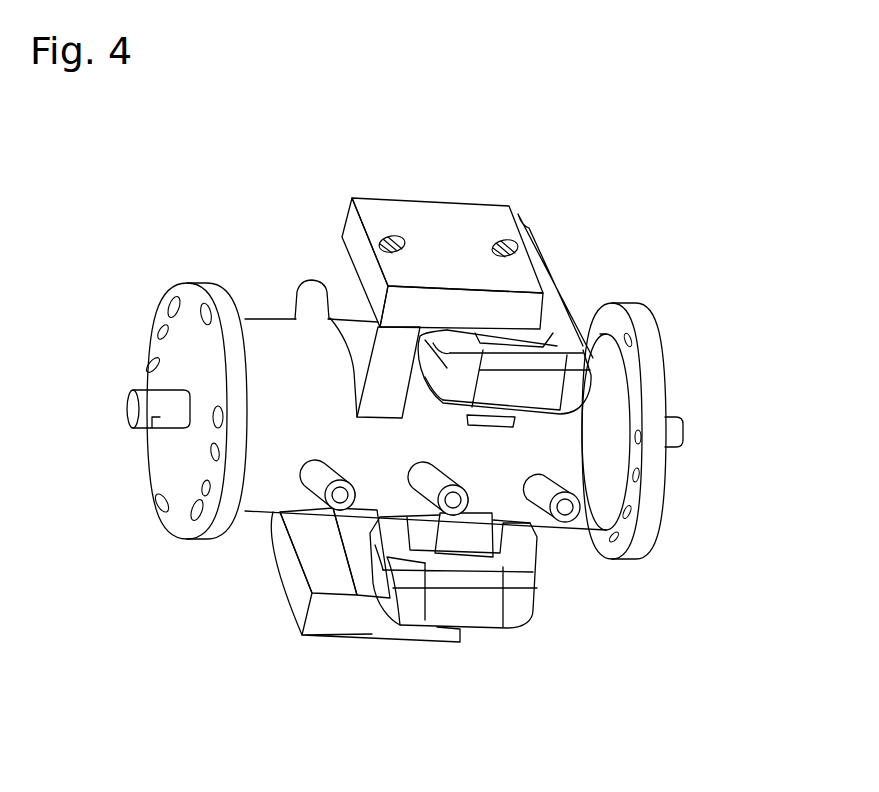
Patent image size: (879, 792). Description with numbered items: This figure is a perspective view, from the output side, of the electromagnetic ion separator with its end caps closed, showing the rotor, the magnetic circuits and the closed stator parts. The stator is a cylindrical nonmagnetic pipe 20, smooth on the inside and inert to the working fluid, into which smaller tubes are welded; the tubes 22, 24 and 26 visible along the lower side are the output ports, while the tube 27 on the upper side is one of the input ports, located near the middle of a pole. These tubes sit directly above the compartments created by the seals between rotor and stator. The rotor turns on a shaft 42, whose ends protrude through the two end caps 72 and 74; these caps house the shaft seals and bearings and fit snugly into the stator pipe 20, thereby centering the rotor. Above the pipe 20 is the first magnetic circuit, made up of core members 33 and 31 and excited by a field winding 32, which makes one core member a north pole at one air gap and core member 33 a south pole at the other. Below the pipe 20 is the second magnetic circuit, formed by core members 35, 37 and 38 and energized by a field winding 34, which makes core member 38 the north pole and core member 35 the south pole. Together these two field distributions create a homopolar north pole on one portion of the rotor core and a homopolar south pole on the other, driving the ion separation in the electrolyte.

The nonmagnetic pipe 20 is at (287, 420).
The tube 22 is at (540, 497).
The tube 24 is at (432, 483).
The tube 26 is at (322, 478).
The tube 27 is at (297, 273).
The core member 31 is at (460, 235).
The field winding 32 is at (557, 323).
The core member 33 is at (340, 298).
The field winding 34 is at (492, 613).
The core member 35 is at (345, 572).
The core member 37 is at (368, 643).
The core member 38 is at (462, 538).
The shaft 42 is at (140, 388).
The end cap 72 is at (648, 358).
The end cap 74 is at (192, 303).